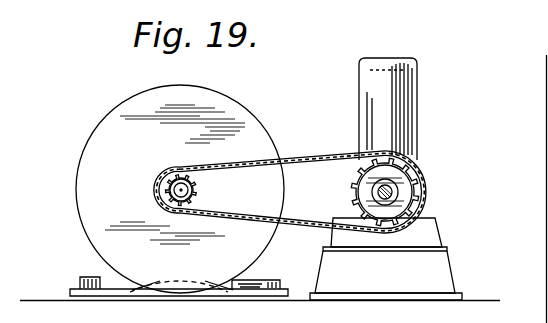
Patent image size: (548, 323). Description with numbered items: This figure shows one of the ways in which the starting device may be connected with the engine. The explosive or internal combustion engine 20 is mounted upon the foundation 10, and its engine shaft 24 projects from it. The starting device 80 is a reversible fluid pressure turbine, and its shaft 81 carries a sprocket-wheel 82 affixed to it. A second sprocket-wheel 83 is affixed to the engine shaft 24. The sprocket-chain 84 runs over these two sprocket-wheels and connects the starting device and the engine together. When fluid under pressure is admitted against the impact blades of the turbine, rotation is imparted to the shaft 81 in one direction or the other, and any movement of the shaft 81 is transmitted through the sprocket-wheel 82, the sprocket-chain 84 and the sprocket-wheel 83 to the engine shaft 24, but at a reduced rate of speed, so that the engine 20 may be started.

The foundation 10 is at (440, 268).
The explosive or internal combustion engine 20 is at (395, 128).
The engine shaft 24 is at (392, 194).
The starting device 80 is at (108, 100).
The shaft 81 is at (176, 200).
The sprocket-wheel 82 is at (200, 187).
The sprocket-wheel 83 is at (350, 192).
The sprocket-chain 84 is at (305, 153).